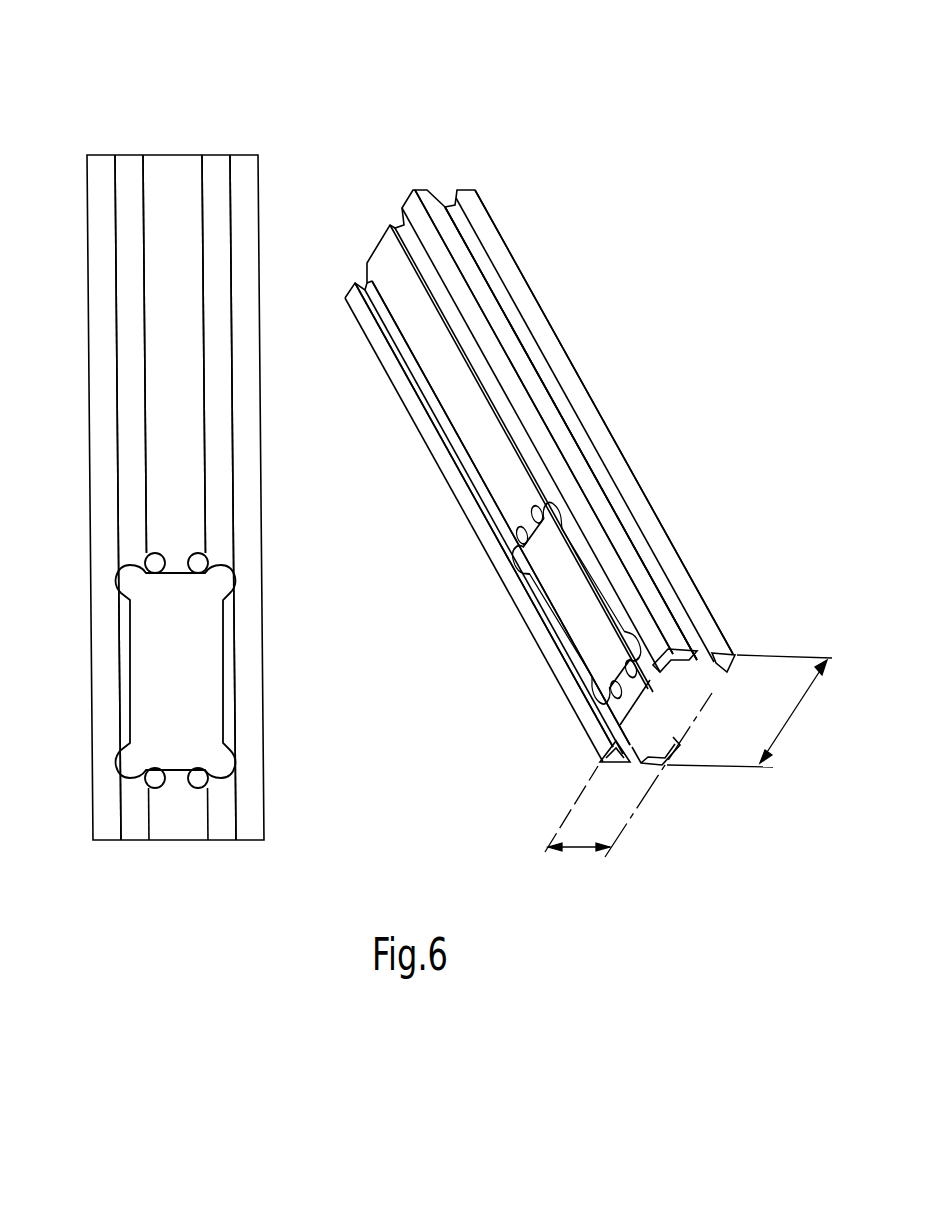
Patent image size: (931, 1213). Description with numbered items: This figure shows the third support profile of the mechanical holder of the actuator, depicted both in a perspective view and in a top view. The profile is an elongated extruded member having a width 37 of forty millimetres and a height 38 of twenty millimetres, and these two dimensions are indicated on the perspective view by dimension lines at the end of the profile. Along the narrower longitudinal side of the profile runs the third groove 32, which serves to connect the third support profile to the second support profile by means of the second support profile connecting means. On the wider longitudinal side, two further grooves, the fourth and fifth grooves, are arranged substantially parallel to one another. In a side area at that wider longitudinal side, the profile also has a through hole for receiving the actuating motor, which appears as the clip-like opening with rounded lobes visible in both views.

The third groove 32 is at (470, 233).
The width 37 is at (787, 720).
The height 38 is at (580, 847).